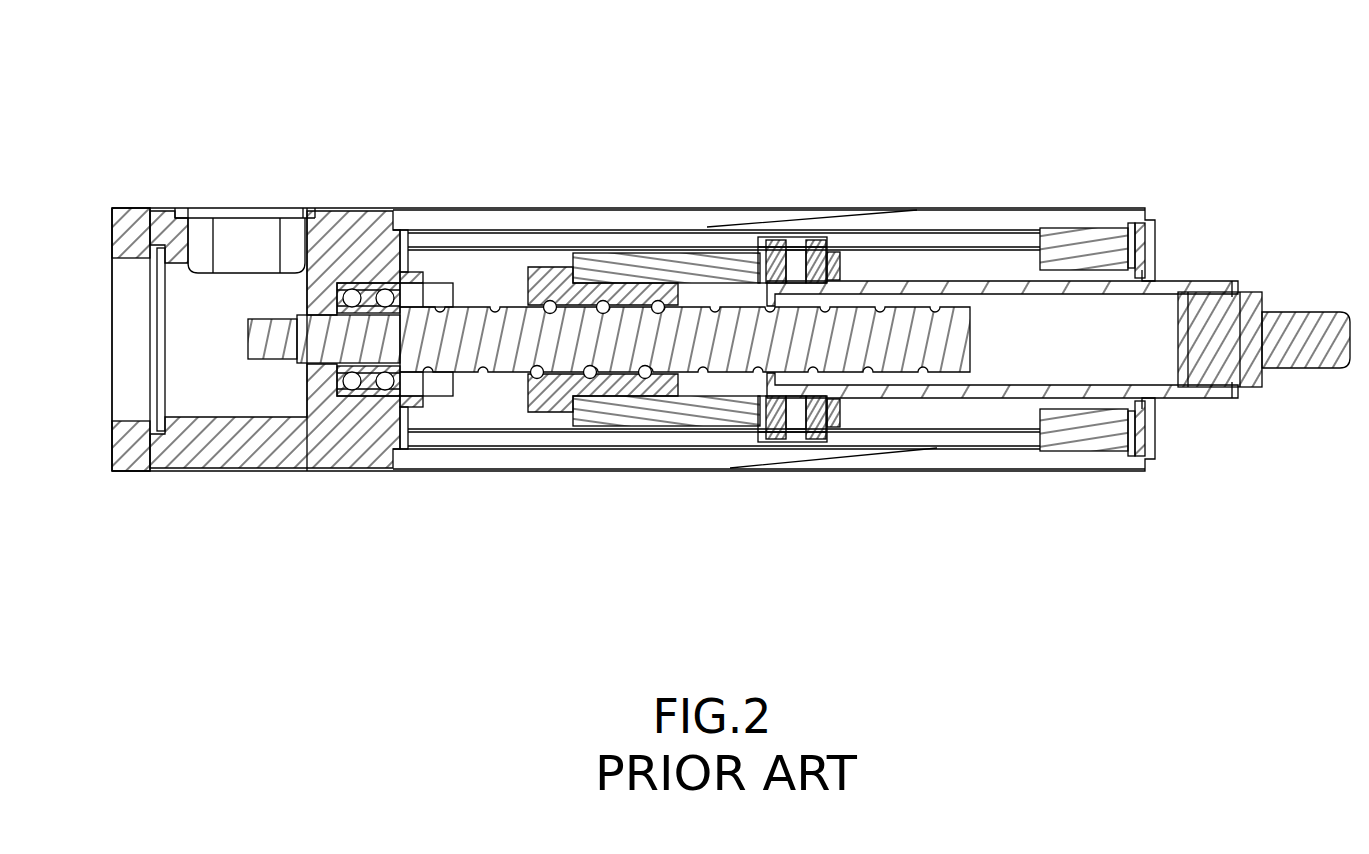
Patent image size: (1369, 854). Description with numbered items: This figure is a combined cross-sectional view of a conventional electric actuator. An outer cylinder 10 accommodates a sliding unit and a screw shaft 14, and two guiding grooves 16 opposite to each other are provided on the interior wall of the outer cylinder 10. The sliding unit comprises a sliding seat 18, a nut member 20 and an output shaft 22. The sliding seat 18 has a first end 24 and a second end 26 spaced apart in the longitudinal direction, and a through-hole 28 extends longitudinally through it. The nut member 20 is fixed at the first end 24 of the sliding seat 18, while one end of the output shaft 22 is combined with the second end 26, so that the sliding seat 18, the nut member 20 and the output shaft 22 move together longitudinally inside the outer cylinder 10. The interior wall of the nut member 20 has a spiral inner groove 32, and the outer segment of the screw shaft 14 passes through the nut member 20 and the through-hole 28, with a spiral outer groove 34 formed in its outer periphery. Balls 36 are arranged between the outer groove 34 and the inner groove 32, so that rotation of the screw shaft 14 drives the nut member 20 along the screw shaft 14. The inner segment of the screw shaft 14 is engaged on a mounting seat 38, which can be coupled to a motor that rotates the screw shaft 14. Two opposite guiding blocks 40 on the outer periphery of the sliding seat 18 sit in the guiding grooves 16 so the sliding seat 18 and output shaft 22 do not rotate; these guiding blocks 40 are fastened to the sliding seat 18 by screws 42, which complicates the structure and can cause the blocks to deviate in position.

The outer cylinder 10 is at (662, 207).
The screw shaft 14 is at (470, 350).
The guiding grooves 16 is at (890, 240).
The sliding seat 18 is at (658, 420).
The nut member 20 is at (552, 280).
The output shaft 22 is at (965, 282).
The first end 24 is at (582, 267).
The second end 26 is at (838, 250).
The through-hole 28 is at (716, 385).
The spiral inner groove 32 is at (540, 372).
The spiral outer groove 34 is at (537, 357).
The balls 36 is at (586, 380).
The mounting seat 38 is at (158, 213).
The guiding blocks 40 is at (788, 441).
The screws 42 is at (776, 237).